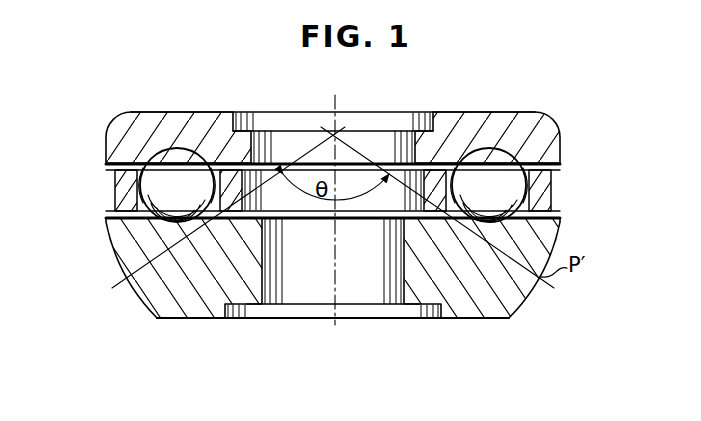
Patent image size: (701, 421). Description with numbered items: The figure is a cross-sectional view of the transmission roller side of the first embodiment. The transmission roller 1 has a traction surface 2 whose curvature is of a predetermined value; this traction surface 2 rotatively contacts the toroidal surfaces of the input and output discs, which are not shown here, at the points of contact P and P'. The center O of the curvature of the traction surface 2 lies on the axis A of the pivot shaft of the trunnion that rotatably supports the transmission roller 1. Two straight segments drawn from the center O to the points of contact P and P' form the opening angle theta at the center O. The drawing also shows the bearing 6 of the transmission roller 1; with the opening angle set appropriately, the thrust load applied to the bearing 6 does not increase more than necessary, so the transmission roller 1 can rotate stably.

The transmission roller 1 is at (105, 228).
The traction surface 2 is at (143, 302).
The bearing 6 is at (562, 172).
The center of curvature O is at (331, 135).
The point of contact P is at (125, 277).
The axis of the pivot shaft A is at (337, 283).